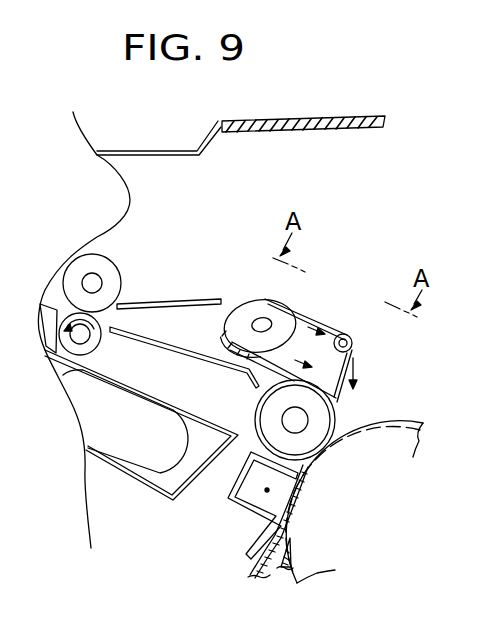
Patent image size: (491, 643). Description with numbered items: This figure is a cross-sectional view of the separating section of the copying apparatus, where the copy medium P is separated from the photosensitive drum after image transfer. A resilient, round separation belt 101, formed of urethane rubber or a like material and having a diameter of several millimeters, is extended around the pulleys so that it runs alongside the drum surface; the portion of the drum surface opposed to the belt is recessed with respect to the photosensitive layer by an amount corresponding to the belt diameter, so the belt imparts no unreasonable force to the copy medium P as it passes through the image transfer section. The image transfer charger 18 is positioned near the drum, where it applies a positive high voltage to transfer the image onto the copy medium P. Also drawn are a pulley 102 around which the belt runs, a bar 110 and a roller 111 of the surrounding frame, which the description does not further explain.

The guide bar 110 is at (182, 320).
The roller 111 is at (98, 340).
The separation belt 101 is at (302, 313).
The pulley 102 is at (340, 408).
The image transfer charger 18 is at (240, 510).
The copy medium P is at (268, 573).